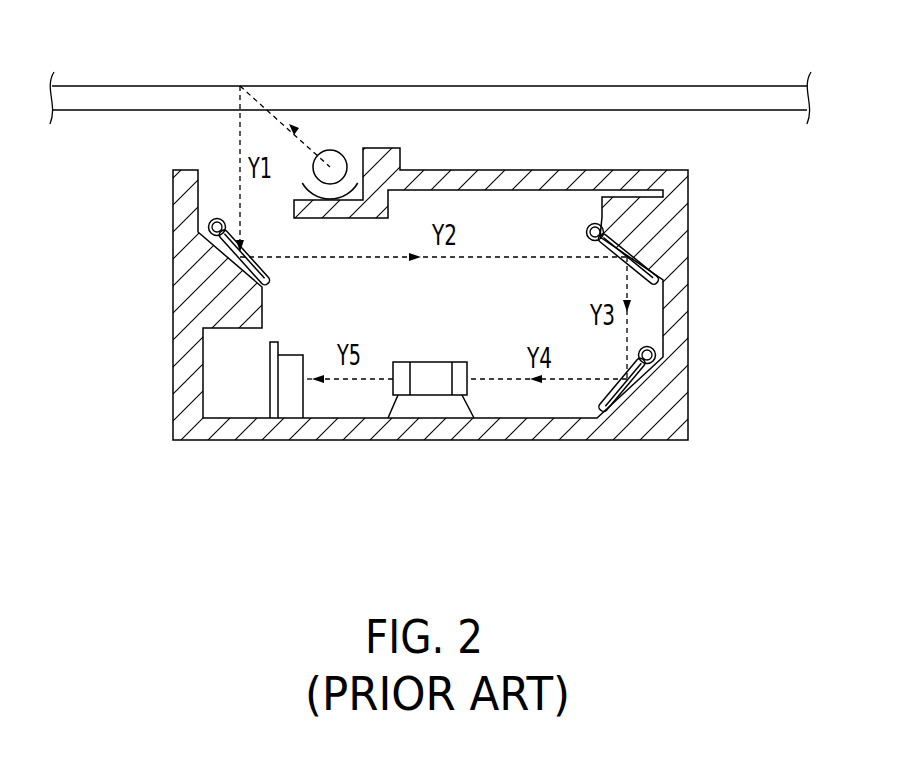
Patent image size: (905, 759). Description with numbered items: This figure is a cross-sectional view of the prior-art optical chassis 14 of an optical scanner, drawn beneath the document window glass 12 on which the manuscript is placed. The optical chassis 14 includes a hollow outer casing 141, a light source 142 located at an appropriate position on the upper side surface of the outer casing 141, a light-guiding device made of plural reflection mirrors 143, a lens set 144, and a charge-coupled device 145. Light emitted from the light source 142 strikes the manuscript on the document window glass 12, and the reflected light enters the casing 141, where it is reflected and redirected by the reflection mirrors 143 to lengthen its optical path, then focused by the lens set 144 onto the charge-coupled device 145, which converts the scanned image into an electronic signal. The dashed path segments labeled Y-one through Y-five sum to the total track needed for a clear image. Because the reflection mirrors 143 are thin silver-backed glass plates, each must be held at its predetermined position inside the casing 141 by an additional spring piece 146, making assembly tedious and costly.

The document window glass 12 is at (468, 87).
The optical chassis 14 is at (365, 294).
The hollow outer casing 141 is at (182, 402).
The light source 142 is at (336, 150).
The reflection mirrors 143 is at (213, 250).
The lens set 144 is at (423, 397).
The charge-coupled device 145 is at (293, 406).
The spring piece 146 is at (212, 219).